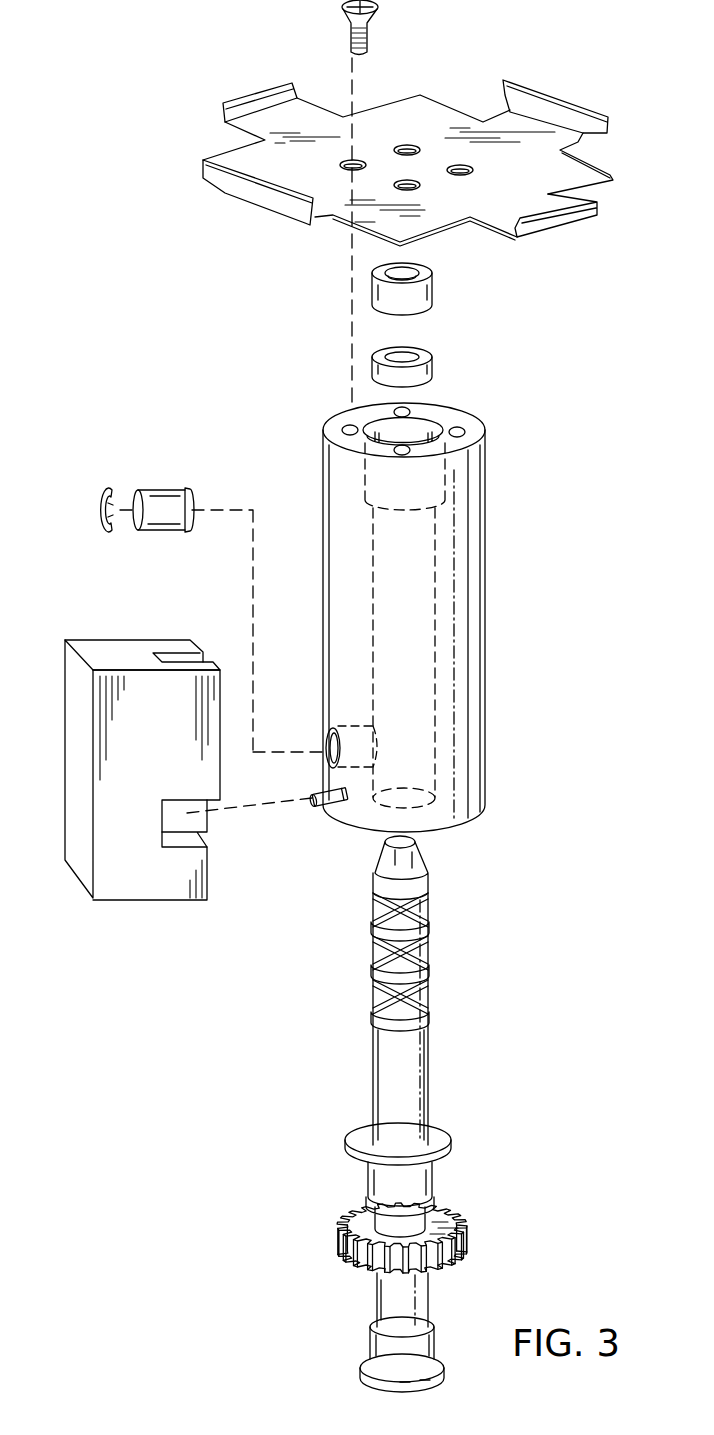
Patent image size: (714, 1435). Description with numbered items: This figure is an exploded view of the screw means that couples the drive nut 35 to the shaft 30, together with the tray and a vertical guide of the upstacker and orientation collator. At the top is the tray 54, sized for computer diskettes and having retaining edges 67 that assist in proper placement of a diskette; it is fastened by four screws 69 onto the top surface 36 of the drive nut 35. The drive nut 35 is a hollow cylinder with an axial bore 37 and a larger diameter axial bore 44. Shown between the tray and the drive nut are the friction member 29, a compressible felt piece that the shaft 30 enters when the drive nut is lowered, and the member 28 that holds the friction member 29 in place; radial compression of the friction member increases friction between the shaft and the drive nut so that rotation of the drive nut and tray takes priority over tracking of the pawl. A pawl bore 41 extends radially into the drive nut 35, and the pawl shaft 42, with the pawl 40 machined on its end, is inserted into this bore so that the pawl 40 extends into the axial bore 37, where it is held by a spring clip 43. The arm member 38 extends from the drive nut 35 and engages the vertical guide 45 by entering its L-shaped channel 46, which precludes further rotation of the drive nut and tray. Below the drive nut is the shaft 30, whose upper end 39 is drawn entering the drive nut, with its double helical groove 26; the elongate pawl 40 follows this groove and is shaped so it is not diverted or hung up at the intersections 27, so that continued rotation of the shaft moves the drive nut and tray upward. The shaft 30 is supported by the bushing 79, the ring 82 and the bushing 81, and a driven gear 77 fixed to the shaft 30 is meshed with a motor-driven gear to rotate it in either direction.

The screws 69 is at (343, 4).
The tray 54 is at (327, 117).
The retaining edges 67 is at (247, 100).
The member 28 is at (432, 288).
The friction member 29 is at (432, 360).
The drive nut 35 is at (485, 610).
The larger diameter axial bore 44 is at (430, 423).
The top surface 36 is at (330, 425).
The axial bore 37 is at (436, 702).
The pawl bore 41 is at (330, 735).
The arm member 38 is at (322, 790).
The vertical guide 45 is at (112, 887).
The L-shaped channel 46 is at (175, 652).
The spring clip 43 is at (108, 490).
The pawl shaft 42 is at (165, 498).
The pawl 40 is at (187, 495).
The tip 39 is at (383, 848).
The shaft 30 is at (380, 1073).
The double helical groove 26 is at (430, 1002).
The intersections 27 is at (373, 1017).
The bushing 79 is at (372, 1183).
The ring 82 is at (430, 1213).
The driven gear 77 is at (337, 1225).
The bushing 81 is at (362, 1353).